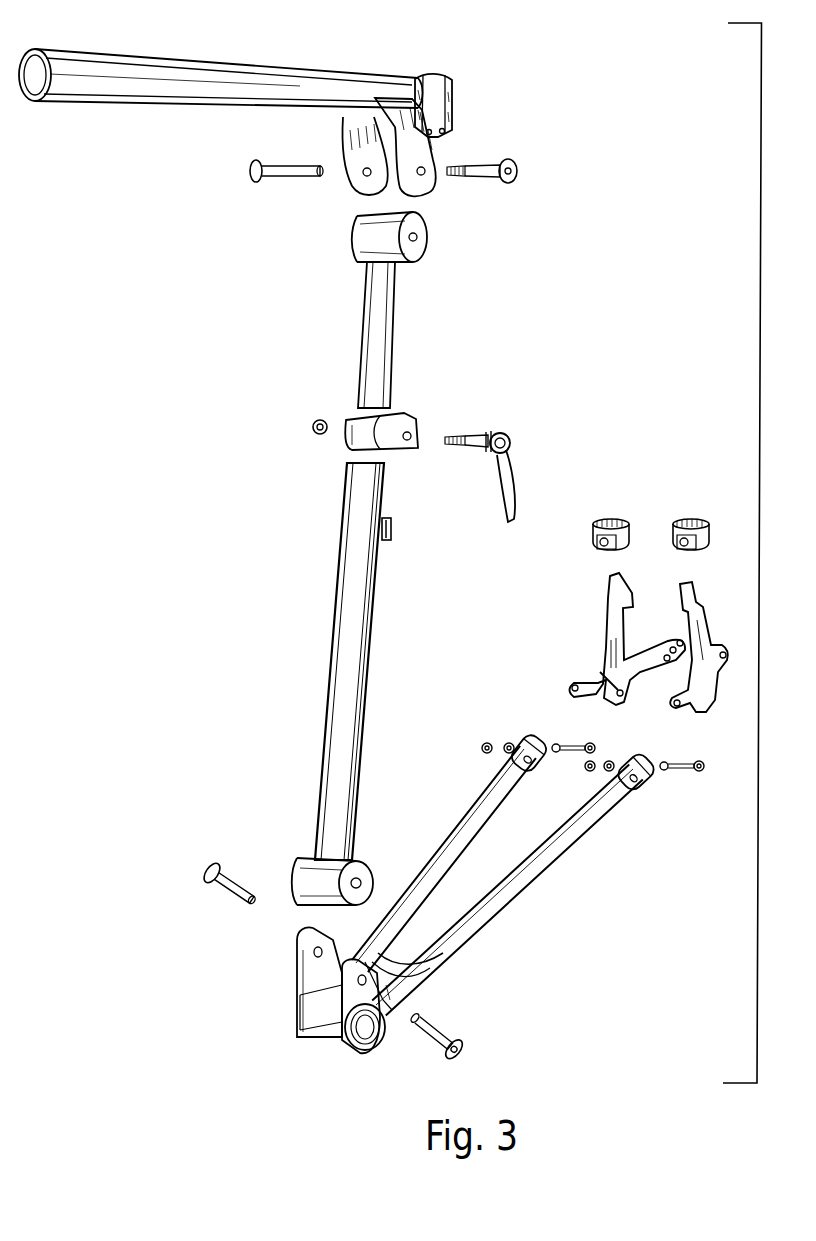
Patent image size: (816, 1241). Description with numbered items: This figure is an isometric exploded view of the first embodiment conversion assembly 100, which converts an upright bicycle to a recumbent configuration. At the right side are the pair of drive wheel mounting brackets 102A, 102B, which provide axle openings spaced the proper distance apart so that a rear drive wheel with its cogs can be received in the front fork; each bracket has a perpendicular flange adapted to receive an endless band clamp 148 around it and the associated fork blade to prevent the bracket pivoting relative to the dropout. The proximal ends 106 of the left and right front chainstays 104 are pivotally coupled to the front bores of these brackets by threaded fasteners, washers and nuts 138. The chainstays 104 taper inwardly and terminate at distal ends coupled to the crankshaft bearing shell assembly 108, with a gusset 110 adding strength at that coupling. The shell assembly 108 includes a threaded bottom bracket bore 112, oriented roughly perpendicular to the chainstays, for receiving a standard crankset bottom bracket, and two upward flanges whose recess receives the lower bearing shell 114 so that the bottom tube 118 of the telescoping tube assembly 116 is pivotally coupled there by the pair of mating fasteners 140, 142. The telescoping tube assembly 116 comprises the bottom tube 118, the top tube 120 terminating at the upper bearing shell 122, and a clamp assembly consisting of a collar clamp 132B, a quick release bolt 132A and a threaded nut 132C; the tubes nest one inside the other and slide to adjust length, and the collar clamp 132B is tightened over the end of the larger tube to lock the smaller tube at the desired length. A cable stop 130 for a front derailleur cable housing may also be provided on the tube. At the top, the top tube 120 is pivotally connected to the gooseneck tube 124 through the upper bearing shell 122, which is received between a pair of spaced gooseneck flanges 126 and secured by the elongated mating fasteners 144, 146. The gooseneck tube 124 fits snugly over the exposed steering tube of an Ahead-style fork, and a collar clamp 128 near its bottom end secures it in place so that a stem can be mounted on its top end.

The first embodiment conversion assembly 100 is at (713, 553).
The drive wheel mounting bracket 102A is at (703, 592).
The drive wheel mounting bracket 102B is at (595, 675).
The front chainstays 104 is at (480, 795).
The proximal ends 106 is at (515, 752).
The crankshaft bearing shell assembly 108 is at (308, 965).
The gusset 110 is at (440, 950).
The bottom bracket bore 112 is at (380, 1050).
The lower bearing shell 114 is at (300, 860).
The telescoping tube assembly 116 is at (232, 536).
The bottom tube 118 is at (338, 595).
The top tube 120 is at (367, 325).
The upper bearing shell 122 is at (357, 237).
The gooseneck tube 124 is at (115, 60).
The gooseneck flanges 126 is at (340, 127).
The collar clamp 128 is at (455, 88).
The cable stop 130 is at (392, 530).
The quick release bolt 132A is at (510, 436).
The collar clamp 132B is at (388, 425).
The threaded nut 132C is at (312, 427).
The threaded fasteners, washers and nuts 138 is at (506, 745).
The mating fastener 140 is at (445, 1030).
The mating fastener 142 is at (215, 885).
The elongated mating fastener 144 is at (482, 160).
The elongated mating fastener 146 is at (277, 183).
The endless band clamp 148 is at (600, 517).